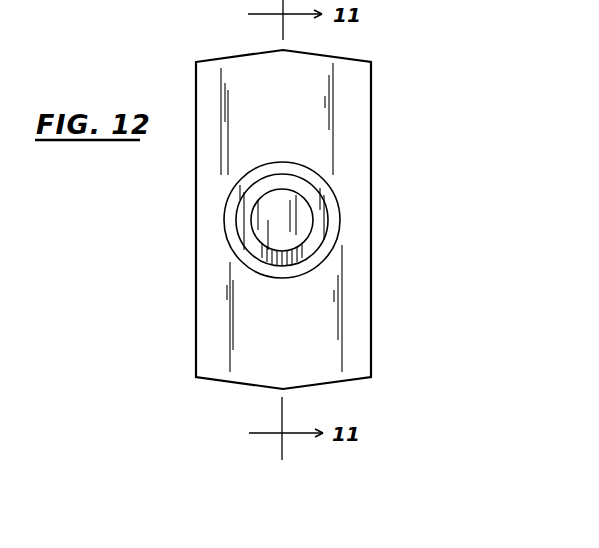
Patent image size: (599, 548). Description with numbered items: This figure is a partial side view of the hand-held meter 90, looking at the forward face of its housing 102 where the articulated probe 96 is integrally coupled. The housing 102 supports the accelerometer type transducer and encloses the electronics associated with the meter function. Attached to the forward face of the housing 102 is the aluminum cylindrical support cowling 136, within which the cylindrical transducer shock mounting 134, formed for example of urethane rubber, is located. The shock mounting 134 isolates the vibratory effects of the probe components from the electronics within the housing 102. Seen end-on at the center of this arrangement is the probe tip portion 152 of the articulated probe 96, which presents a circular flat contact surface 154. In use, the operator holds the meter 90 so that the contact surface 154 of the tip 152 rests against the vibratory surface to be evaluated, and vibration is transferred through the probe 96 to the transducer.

The hand-held meter 90 is at (348, 203).
The housing 102 is at (355, 143).
The cylindrical support cowling 136 is at (330, 196).
The probe tip portion 152 is at (252, 241).
The circular flat contact surface 154 is at (263, 210).
The articulated probe 96 is at (316, 220).
The transducer shock mounting 134 is at (315, 243).